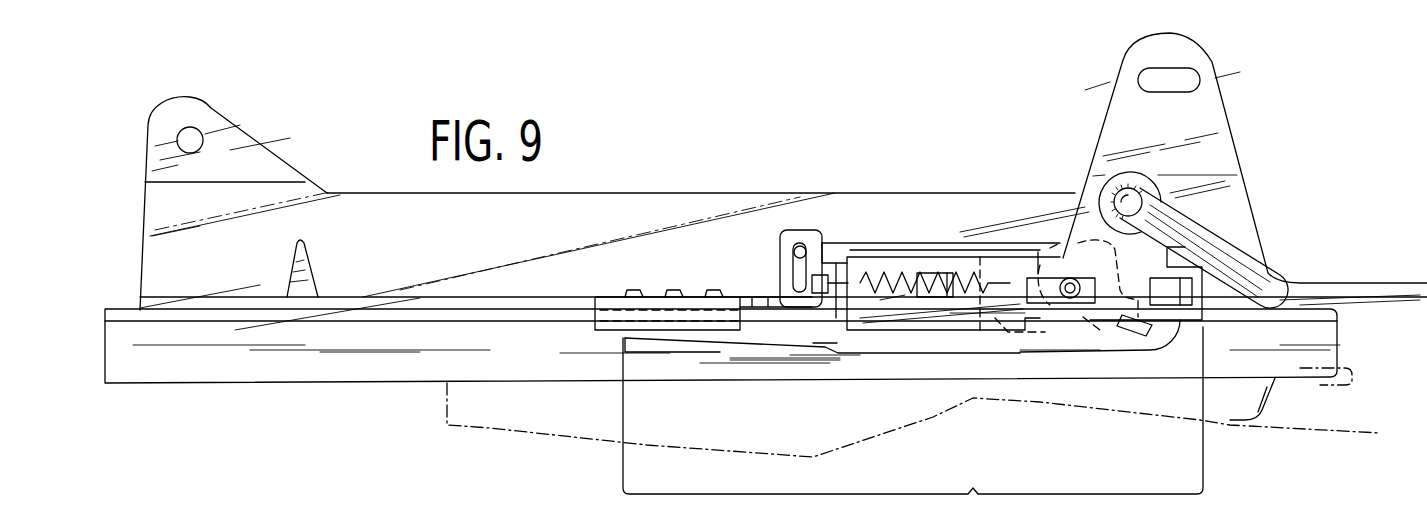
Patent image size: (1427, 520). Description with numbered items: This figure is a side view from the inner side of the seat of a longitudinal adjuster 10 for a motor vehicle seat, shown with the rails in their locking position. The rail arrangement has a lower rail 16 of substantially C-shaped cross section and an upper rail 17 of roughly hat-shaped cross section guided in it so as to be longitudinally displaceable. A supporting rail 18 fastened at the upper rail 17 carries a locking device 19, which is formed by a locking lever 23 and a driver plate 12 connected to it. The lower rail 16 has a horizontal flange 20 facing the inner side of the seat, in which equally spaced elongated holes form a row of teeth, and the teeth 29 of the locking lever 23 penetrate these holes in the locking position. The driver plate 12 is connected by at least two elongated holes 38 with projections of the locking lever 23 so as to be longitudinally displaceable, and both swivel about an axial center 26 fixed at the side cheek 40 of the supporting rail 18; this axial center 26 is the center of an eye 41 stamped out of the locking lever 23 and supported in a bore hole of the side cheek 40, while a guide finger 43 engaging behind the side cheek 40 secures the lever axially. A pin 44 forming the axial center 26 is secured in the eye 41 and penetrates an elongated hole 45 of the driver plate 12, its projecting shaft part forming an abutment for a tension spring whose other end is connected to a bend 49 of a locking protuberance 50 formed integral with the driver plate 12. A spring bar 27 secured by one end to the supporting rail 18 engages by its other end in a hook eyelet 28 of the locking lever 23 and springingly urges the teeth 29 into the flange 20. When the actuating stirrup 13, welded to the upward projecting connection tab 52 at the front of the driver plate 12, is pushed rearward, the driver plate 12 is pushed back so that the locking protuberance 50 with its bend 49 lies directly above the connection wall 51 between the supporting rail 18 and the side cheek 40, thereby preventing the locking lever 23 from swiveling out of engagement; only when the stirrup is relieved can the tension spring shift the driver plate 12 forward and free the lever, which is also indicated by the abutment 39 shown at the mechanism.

The seat adjuster assembly 10 is at (913, 423).
The driver plate 12 is at (877, 303).
The actuating stirrup 13 is at (1383, 297).
The lower rail 16 is at (217, 360).
The upper rail 17 is at (227, 305).
The supporting rail 18 is at (402, 241).
The locking device 19 is at (829, 372).
The horizontal flange 20 is at (340, 312).
The locking lever 23 is at (815, 338).
The axial center 26 is at (1070, 300).
The spring bar 27 is at (942, 245).
The hook eyelet 28 is at (797, 237).
The teeth 29 is at (712, 290).
The elongated holes 38 is at (1168, 283).
The abutment 39 is at (1190, 293).
The side cheek 40 is at (1127, 340).
The eye 41 is at (1080, 305).
The guide finger 43 is at (1155, 328).
The pin 44 is at (1060, 258).
The elongated hole 45 is at (1032, 303).
The bend 49 is at (827, 272).
The locking protuberance 50 is at (847, 257).
The connection wall 51 is at (757, 347).
The connection tab 52 is at (1085, 237).